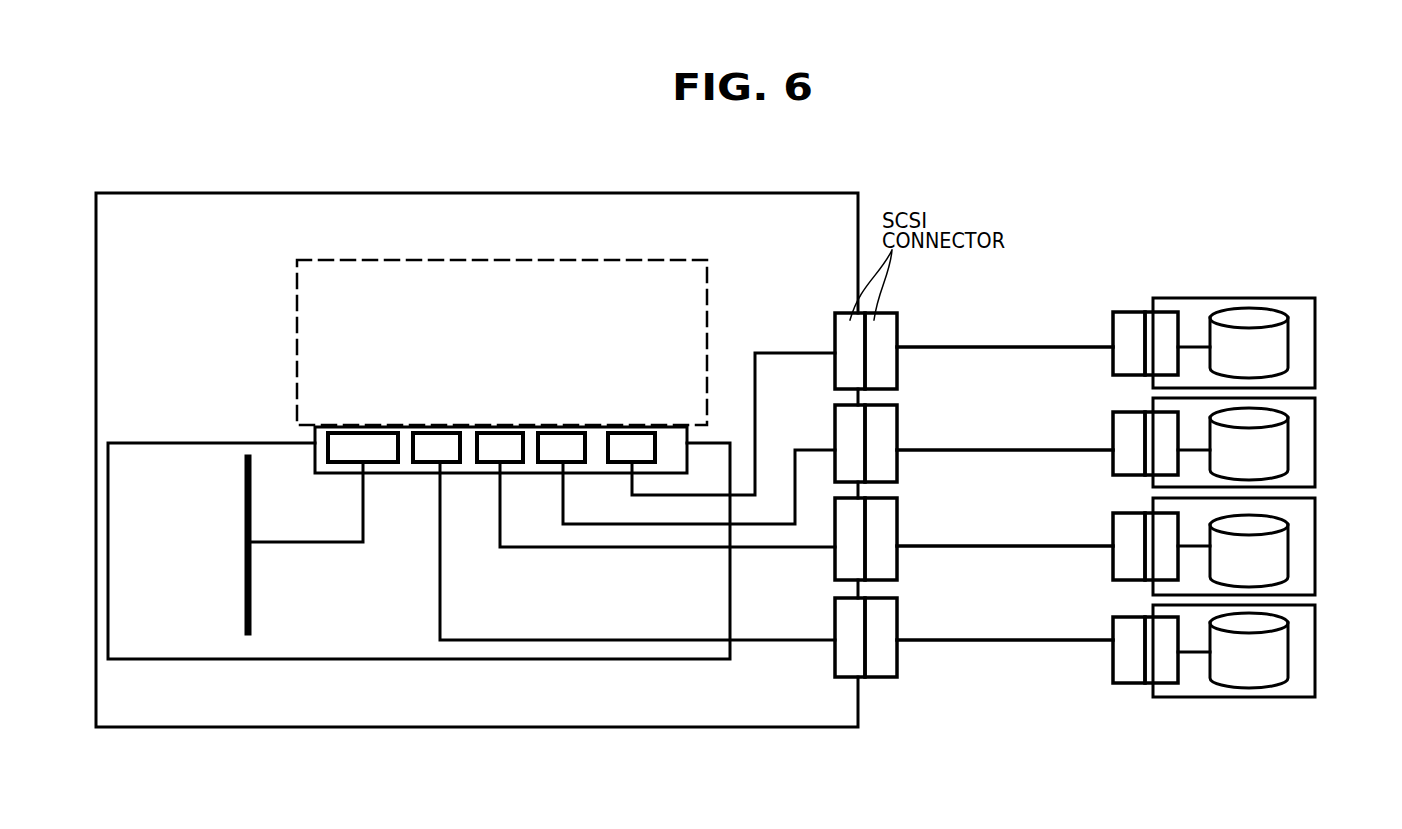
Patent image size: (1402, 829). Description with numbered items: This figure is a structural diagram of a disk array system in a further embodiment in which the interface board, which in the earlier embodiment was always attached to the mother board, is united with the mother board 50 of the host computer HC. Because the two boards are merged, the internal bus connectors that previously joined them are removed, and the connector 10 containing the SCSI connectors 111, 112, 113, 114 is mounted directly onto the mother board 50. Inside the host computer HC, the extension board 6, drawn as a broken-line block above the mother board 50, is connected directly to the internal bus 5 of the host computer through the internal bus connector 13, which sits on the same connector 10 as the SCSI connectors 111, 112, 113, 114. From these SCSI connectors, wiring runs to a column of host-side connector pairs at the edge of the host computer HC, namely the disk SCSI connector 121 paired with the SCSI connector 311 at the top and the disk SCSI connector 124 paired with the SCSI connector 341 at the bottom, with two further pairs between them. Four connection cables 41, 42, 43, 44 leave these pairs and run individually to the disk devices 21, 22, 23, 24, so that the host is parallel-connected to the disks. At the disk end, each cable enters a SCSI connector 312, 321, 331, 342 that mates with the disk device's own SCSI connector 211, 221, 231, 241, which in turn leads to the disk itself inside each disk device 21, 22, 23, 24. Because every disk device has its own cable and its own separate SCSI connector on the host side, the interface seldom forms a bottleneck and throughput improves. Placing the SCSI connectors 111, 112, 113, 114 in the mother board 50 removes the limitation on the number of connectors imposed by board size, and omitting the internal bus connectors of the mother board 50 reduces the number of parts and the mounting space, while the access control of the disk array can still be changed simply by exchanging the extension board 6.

The host computer HC is at (680, 729).
The mother board 50 is at (622, 660).
The extension board 6 is at (297, 304).
The internal bus 5 is at (246, 590).
The connector 10 is at (400, 475).
The internal bus connector 13 is at (358, 445).
The SCSI connector 114 is at (432, 445).
The SCSI connector 113 is at (495, 445).
The SCSI connector 112 is at (558, 445).
The SCSI connector 111 is at (630, 445).
The disk SCSI connector 121 is at (848, 320).
The SCSI connector 311 is at (890, 307).
The disk SCSI connector 124 is at (835, 612).
The SCSI connector 341 is at (885, 679).
The connection cable 41 is at (955, 350).
The connection cable 42 is at (955, 453).
The connection cable 43 is at (950, 549).
The connection cable 44 is at (950, 643).
The SCSI connector 312 is at (1122, 320).
The SCSI connector 211 is at (1162, 318).
The disk device 21 is at (1318, 312).
The SCSI connector 321 is at (1120, 432).
The SCSI connector 221 is at (1157, 465).
The disk device 22 is at (1318, 462).
The SCSI connector 331 is at (1113, 532).
The SCSI connector 231 is at (1152, 568).
The disk device 23 is at (1318, 560).
The SCSI connector 342 is at (1113, 668).
The SCSI connector 241 is at (1165, 675).
The disk device 24 is at (1318, 655).